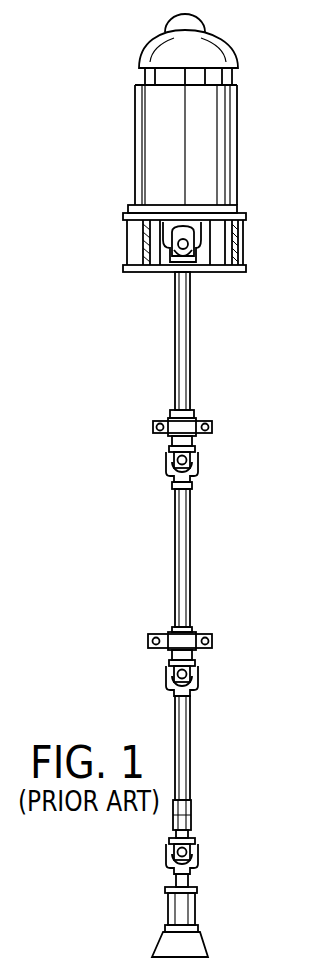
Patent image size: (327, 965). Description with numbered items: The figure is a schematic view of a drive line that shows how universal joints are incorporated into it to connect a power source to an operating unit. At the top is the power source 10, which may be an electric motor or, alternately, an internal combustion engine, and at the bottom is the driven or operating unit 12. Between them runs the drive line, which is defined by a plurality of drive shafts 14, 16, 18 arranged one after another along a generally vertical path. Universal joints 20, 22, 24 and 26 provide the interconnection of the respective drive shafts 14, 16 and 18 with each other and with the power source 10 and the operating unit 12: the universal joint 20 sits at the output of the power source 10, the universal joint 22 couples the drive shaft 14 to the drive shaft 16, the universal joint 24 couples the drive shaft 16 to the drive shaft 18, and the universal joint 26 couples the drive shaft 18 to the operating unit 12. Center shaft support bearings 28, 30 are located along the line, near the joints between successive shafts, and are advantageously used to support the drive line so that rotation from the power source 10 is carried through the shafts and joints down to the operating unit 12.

The power source 10 is at (131, 171).
The operating unit 12 is at (211, 930).
The drive shaft 14 is at (173, 332).
The drive shaft 16 is at (192, 546).
The drive shaft 18 is at (194, 737).
The universal joint 20 is at (212, 237).
The universal joint 22 is at (205, 464).
The universal joint 24 is at (204, 670).
The universal joint 26 is at (207, 852).
The center shaft support bearing 28 is at (148, 435).
The center shaft support bearing 30 is at (150, 619).